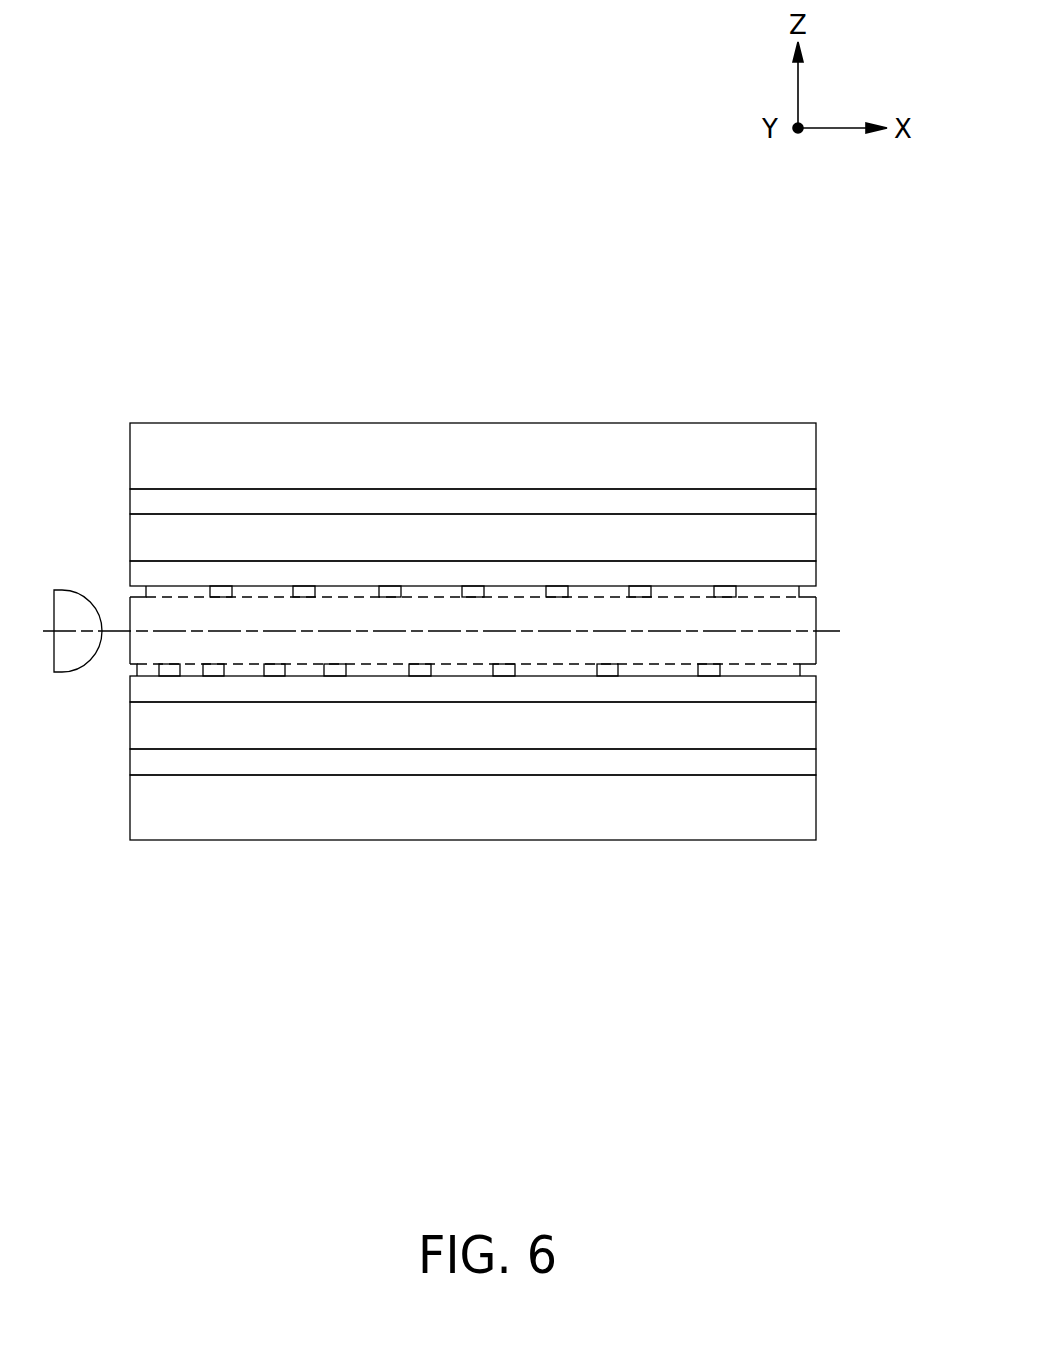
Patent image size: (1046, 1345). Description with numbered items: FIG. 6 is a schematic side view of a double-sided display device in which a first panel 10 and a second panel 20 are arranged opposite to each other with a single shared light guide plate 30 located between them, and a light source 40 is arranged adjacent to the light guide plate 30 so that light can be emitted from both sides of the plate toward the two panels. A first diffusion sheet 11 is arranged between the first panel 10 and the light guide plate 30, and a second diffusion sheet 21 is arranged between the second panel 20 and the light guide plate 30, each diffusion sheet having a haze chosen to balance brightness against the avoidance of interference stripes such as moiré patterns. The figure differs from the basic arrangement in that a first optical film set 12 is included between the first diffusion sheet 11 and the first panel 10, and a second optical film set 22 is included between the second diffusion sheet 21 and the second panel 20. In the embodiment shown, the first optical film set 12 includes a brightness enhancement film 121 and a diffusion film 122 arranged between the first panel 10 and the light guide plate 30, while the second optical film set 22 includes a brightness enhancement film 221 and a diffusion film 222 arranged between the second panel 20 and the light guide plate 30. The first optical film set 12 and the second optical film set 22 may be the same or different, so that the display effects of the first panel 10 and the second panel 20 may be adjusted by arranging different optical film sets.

The first panel 10 is at (803, 807).
The first diffusion sheet 11 is at (803, 688).
The first optical film set 12 is at (546, 740).
The brightness enhancement film 121 is at (803, 724).
The diffusion film 122 is at (803, 758).
The second panel 20 is at (803, 449).
The second diffusion sheet 21 is at (803, 578).
The second optical film set 22 is at (546, 522).
The brightness enhancement film 221 is at (803, 538).
The diffusion film 222 is at (803, 498).
The light guide plate 30 is at (811, 637).
The light source 40 is at (72, 600).